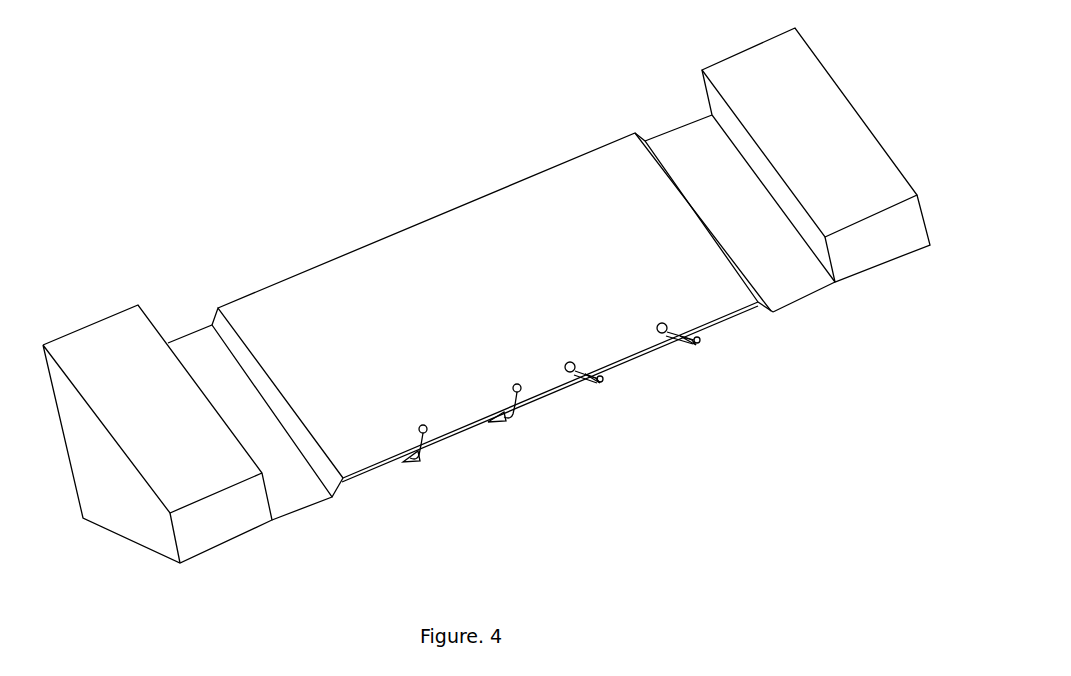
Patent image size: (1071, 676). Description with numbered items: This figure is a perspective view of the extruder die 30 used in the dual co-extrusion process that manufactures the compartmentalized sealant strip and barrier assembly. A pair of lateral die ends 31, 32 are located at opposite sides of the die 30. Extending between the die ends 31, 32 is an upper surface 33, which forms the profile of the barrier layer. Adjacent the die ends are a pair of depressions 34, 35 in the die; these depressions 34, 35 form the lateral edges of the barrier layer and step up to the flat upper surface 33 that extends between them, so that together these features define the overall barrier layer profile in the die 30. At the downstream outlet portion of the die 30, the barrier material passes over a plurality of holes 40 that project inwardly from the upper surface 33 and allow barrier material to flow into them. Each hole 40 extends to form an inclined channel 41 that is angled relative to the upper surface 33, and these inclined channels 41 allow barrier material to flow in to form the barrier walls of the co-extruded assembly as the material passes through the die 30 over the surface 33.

The die 30 is at (407, 175).
The lateral die end 31 is at (110, 502).
The lateral die end 32 is at (828, 142).
The upper surface 33 is at (310, 303).
The depression 34 is at (207, 360).
The depression 35 is at (708, 158).
The hole 40 is at (428, 448).
The inclined channel 41 is at (504, 420).